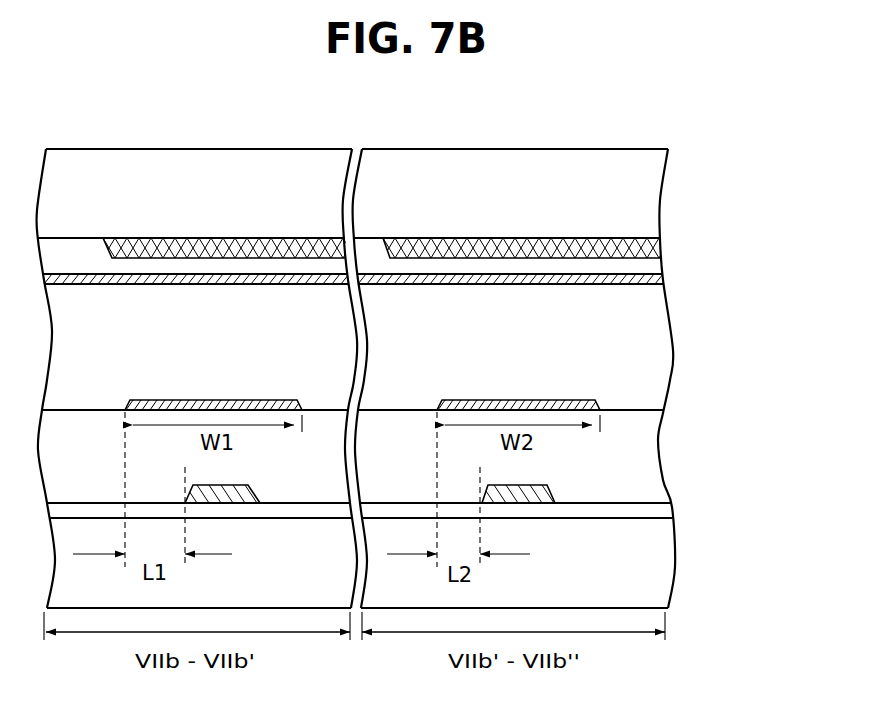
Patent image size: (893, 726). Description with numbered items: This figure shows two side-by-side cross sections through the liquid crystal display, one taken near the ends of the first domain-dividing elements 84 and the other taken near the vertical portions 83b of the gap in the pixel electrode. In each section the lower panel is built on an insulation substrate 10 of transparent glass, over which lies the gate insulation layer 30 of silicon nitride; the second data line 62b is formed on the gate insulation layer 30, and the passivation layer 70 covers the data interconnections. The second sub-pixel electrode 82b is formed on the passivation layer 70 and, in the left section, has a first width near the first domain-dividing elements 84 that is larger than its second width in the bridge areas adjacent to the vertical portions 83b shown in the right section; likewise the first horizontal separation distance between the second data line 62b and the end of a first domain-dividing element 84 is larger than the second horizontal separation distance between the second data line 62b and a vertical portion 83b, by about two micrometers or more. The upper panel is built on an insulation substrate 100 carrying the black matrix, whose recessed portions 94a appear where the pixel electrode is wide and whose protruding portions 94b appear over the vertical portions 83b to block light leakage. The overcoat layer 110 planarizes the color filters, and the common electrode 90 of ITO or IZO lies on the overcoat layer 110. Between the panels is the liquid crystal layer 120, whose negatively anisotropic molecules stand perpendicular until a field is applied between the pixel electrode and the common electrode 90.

The insulation substrate 10 is at (655, 565).
The gate insulation layer 30 is at (655, 513).
The second data line 62b is at (238, 493).
The passivation layer 70 is at (648, 460).
The second sub-pixel electrode 82b is at (205, 400).
The vertical portions 83b is at (409, 392).
The first domain-dividing elements 84 is at (95, 392).
The common electrode 90 is at (78, 275).
The recessed portions 94a is at (187, 240).
The protruding portions 94b is at (453, 240).
The insulation substrate 100 is at (287, 165).
The overcoat layer 110 is at (643, 268).
The liquid crystal layer 120 is at (648, 352).